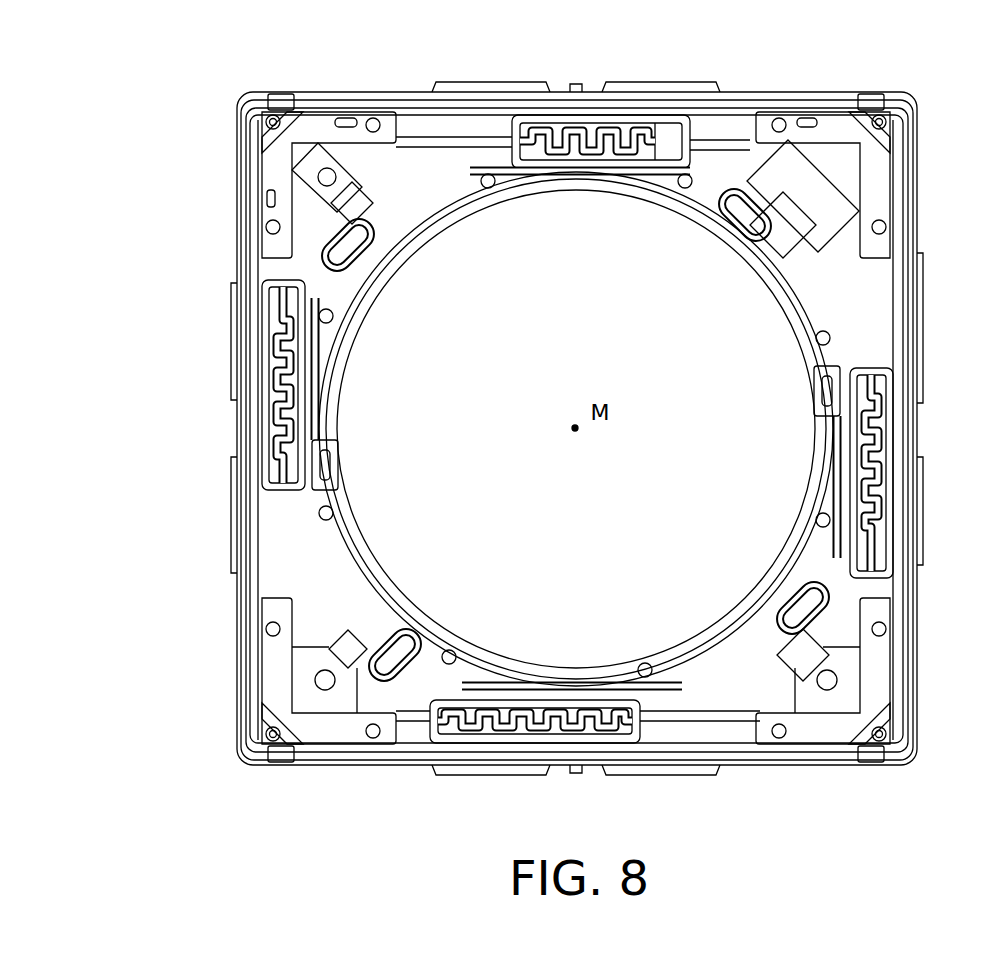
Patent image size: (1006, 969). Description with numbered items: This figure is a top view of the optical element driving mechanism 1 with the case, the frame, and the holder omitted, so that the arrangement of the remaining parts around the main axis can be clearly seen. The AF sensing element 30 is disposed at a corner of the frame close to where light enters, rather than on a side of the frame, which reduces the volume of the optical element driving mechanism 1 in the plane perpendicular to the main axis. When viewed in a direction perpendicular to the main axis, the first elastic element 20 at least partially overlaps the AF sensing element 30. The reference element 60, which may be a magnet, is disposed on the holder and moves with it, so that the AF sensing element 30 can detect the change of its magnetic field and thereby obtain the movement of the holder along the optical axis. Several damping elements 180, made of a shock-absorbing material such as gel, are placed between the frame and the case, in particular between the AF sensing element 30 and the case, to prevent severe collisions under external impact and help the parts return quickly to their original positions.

The optical element driving mechanism 1 is at (42, 57).
The first elastic element 20 is at (670, 128).
The AF sensing element 30 is at (878, 172).
The reference element 60 is at (806, 229).
The damping element 180 is at (313, 123).